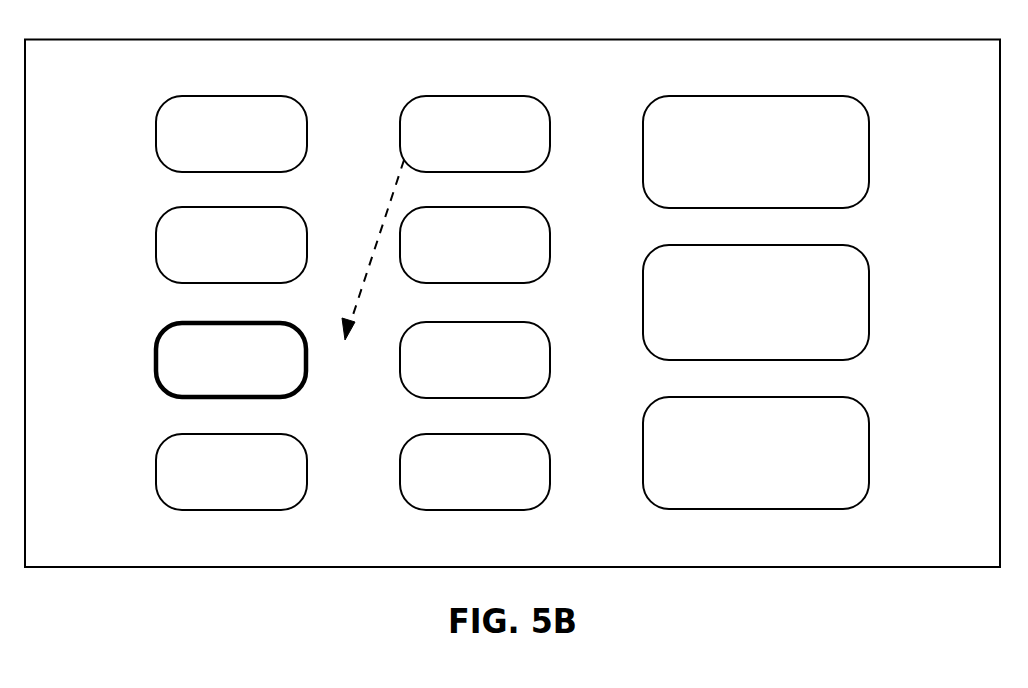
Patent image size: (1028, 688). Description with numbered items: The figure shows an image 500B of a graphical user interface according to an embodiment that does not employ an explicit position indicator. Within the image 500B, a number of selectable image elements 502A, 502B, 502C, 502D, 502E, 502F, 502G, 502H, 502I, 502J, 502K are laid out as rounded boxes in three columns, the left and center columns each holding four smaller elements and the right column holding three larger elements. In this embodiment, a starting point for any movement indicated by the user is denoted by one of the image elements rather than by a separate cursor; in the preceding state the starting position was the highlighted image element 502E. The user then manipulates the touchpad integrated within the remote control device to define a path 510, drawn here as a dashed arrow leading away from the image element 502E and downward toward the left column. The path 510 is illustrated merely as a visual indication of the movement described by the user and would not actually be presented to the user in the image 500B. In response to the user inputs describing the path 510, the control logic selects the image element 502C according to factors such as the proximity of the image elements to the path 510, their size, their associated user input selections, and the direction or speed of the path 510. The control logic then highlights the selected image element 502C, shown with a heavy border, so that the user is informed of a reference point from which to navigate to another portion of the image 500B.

The image 500B is at (887, 39).
The image element 502A is at (221, 128).
The image element 502B is at (221, 240).
The image element 502C is at (223, 354).
The image element 502D is at (222, 466).
The image element 502E is at (465, 128).
The image element 502F is at (464, 240).
The image element 502G is at (468, 354).
The image element 502H is at (467, 466).
The image element 502I is at (700, 128).
The image element 502J is at (706, 278).
The image element 502K is at (711, 430).
The path 510 is at (382, 226).